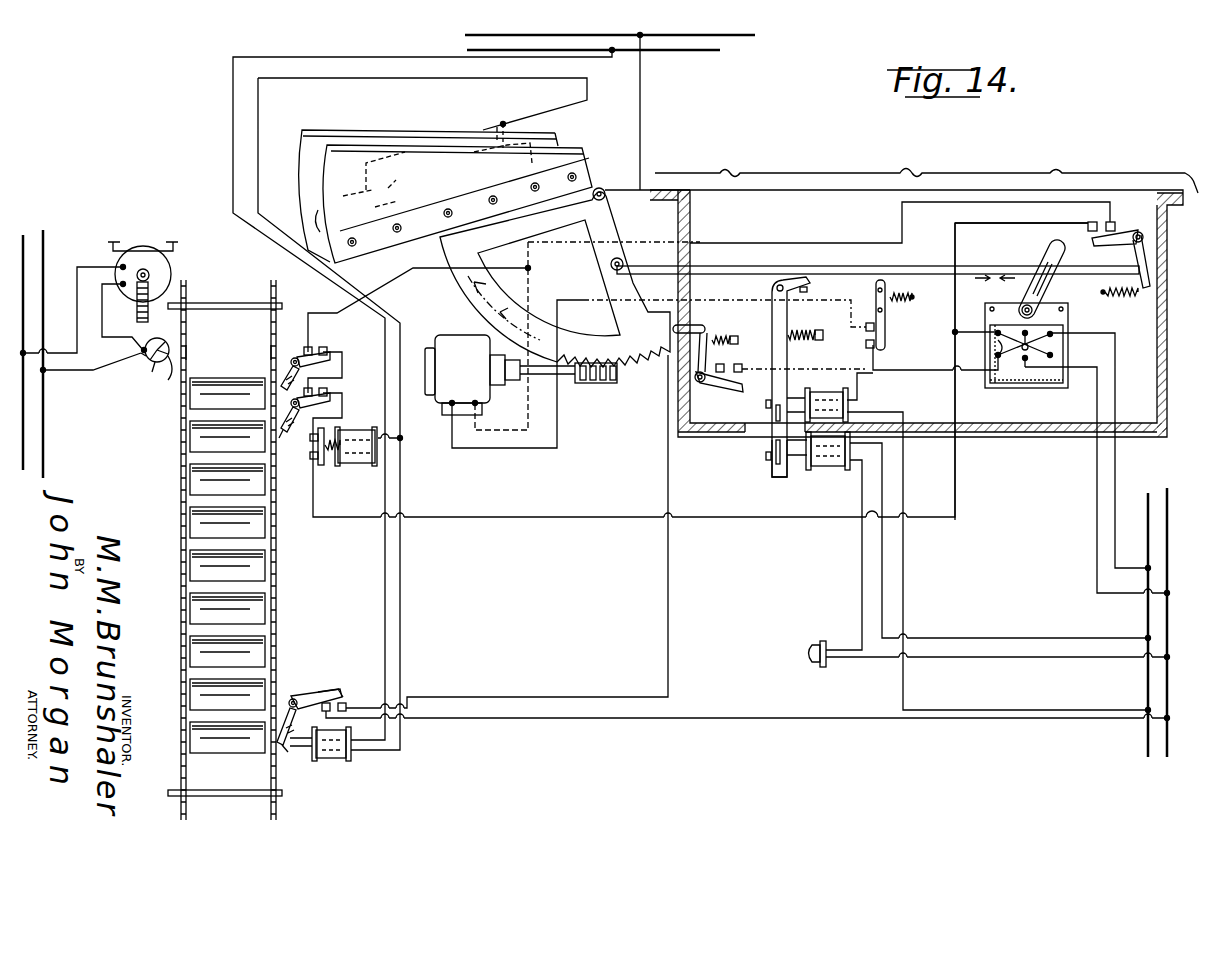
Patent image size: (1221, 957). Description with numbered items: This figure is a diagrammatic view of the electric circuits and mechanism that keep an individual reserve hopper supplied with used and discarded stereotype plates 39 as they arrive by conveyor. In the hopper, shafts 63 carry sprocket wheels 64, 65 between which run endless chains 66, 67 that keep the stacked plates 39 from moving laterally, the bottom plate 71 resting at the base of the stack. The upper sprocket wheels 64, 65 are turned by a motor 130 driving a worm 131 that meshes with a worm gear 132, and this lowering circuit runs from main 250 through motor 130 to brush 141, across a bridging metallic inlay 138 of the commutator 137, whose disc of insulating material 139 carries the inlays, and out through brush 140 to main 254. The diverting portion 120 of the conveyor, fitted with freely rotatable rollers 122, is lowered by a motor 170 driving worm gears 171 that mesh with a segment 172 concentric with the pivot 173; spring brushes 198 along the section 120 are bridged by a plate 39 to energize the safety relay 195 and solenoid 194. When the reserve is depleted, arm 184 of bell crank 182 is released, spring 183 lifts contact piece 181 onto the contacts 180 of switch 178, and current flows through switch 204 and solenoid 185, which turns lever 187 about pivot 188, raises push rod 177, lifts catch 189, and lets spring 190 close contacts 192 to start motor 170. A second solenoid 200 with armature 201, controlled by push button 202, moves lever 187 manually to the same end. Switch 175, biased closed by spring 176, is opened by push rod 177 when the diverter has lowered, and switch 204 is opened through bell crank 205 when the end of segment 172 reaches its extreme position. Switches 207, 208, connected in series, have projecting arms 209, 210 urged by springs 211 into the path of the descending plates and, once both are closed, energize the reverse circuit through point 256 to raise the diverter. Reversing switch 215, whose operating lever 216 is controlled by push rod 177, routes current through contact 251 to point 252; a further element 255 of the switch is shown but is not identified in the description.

The plates 39 is at (246, 382).
The shafts 63 is at (224, 303).
The sprocket wheels 64 is at (186, 292).
The sprocket wheels 65 is at (272, 292).
The endless chains 66 is at (187, 350).
The endless chains 67 is at (271, 352).
The bottom plate 71 is at (228, 746).
The pivoted portion of conveyor frame 120 is at (413, 162).
The rollers 122 is at (320, 220).
The motor 130 is at (156, 262).
The worm 131 is at (142, 269).
The worm gear 132 is at (137, 319).
The commutator 137 is at (170, 362).
The conducting portions 138 is at (154, 362).
The disc of insulating material 139 is at (168, 336).
The brush 140 is at (144, 356).
The brush 141 is at (142, 348).
The motor 170 is at (500, 375).
The worm gears 171 is at (591, 384).
The segment 172 is at (597, 318).
The pivot 173 is at (606, 198).
The switch 175 is at (1112, 232).
The spring 176 is at (1130, 302).
The push rod 177 is at (765, 267).
The switch 178 is at (338, 688).
The contacts 180 is at (346, 704).
The contact piece 181 is at (325, 690).
The bell crank 182 is at (294, 697).
The spring 183 is at (300, 742).
The arm 184 is at (286, 752).
The solenoid 185 is at (850, 406).
The lever 187 is at (790, 362).
The pivot 188 is at (777, 292).
The catch 189 is at (905, 283).
The spring 190 is at (899, 298).
The contacts 192 is at (886, 338).
The solenoid 194 is at (345, 760).
The relay 195 is at (355, 466).
The spring brushes 198 is at (382, 198).
The second solenoid 200 is at (836, 470).
The armature 201 is at (782, 458).
The push button 202 is at (812, 653).
The switch 204 is at (728, 392).
The bell crank 205 is at (707, 327).
The switch 207 is at (318, 350).
The switch 208 is at (325, 397).
The projecting arm 209 is at (290, 356).
The projecting arm 210 is at (286, 462).
The springs 211 is at (282, 388).
The reversing switch 215 is at (1060, 316).
The operating lever 216 is at (1043, 270).
The main 250 is at (755, 38).
The contact 251 is at (993, 356).
The point 252 is at (956, 330).
The main 254 is at (705, 52).
The contacts 255 is at (993, 388).
The point 256 is at (528, 271).